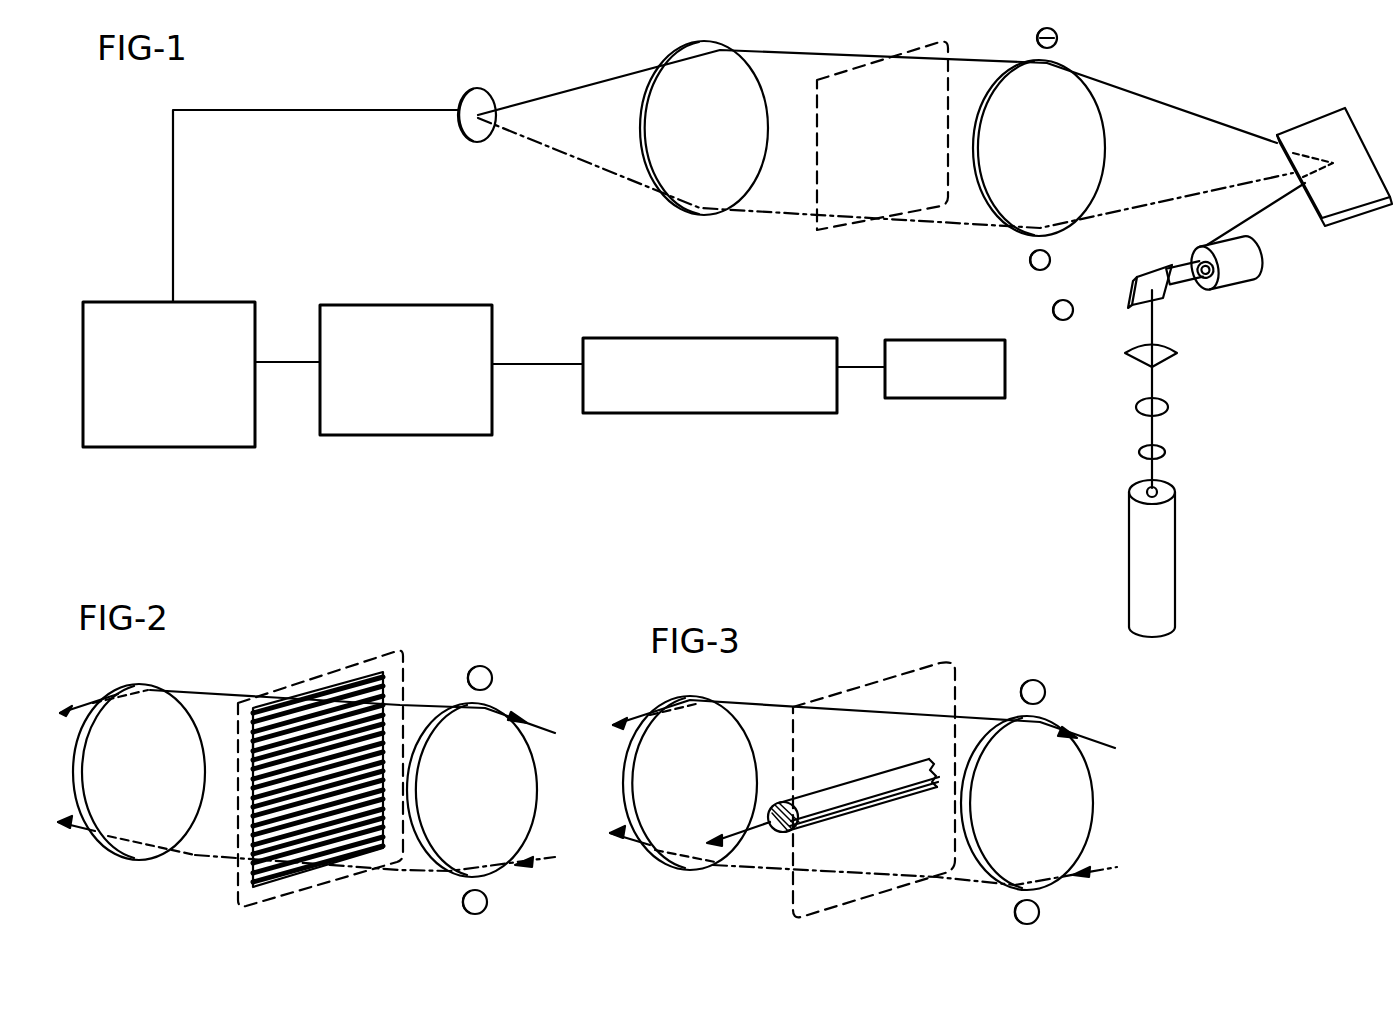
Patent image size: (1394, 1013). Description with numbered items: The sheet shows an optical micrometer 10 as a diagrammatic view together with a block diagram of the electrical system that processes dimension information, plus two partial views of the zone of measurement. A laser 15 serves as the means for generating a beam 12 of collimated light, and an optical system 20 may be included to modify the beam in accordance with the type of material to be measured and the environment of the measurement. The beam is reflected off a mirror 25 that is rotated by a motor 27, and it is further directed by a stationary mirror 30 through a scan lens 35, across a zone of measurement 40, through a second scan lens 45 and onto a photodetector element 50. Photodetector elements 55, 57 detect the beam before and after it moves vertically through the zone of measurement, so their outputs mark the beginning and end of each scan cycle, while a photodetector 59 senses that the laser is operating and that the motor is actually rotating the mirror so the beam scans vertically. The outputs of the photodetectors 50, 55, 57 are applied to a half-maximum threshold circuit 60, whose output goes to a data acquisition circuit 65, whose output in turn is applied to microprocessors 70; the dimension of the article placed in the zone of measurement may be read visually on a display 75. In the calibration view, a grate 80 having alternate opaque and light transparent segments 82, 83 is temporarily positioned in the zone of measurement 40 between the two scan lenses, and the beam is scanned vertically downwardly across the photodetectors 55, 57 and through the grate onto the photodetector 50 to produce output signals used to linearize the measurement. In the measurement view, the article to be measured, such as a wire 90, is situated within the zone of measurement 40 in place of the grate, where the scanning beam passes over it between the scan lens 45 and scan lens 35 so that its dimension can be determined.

In FIG. 1, the optical micrometer 10 is at (1000, 405).
In FIG. 1, the beam 12 is at (1147, 466).
In FIG. 1, the laser 15 is at (1163, 575).
In FIG. 1, the optical system 20 is at (1196, 460).
In FIG. 1, the mirror 25 is at (1141, 271).
In FIG. 1, the motor 27 is at (1245, 267).
In FIG. 1, the stationary mirror 30 is at (1337, 123).
In FIG. 1, the scan lens 35 is at (1060, 63).
In FIG. 2, the scan lens 35 is at (487, 705).
In FIG. 3, the scan lens 35 is at (1052, 718).
In FIG. 1, the zone of measurement 40 is at (838, 232).
In FIG. 2, the zone of measurement 40 is at (313, 675).
In FIG. 3, the zone of measurement 40 is at (883, 678).
In FIG. 1, the second scan lens 45 is at (688, 203).
In FIG. 2, the second scan lens 45 is at (145, 688).
In FIG. 3, the second scan lens 45 is at (697, 697).
In FIG. 1, the photodetector element 50 is at (476, 135).
In FIG. 1, the photodetector element 55 is at (1036, 38).
In FIG. 2, the photodetector element 55 is at (486, 667).
In FIG. 3, the photodetector element 55 is at (1037, 682).
In FIG. 1, the photodetector element 57 is at (1032, 265).
In FIG. 2, the photodetector element 57 is at (462, 902).
In FIG. 3, the photodetector element 57 is at (1040, 912).
In FIG. 1, the photodetector 59 is at (1060, 320).
In FIG. 1, the half-maximum threshold circuit 60 is at (236, 308).
In FIG. 1, the data acquisition circuit 65 is at (452, 314).
In FIG. 1, the microprocessors 70 is at (734, 348).
In FIG. 1, the display 75 is at (928, 346).
In FIG. 2, the grate 80 is at (298, 880).
In FIG. 2, the opaque segments 82 is at (253, 748).
In FIG. 2, the light transparent segments 83 is at (250, 757).
In FIG. 3, the wire 90 is at (882, 798).